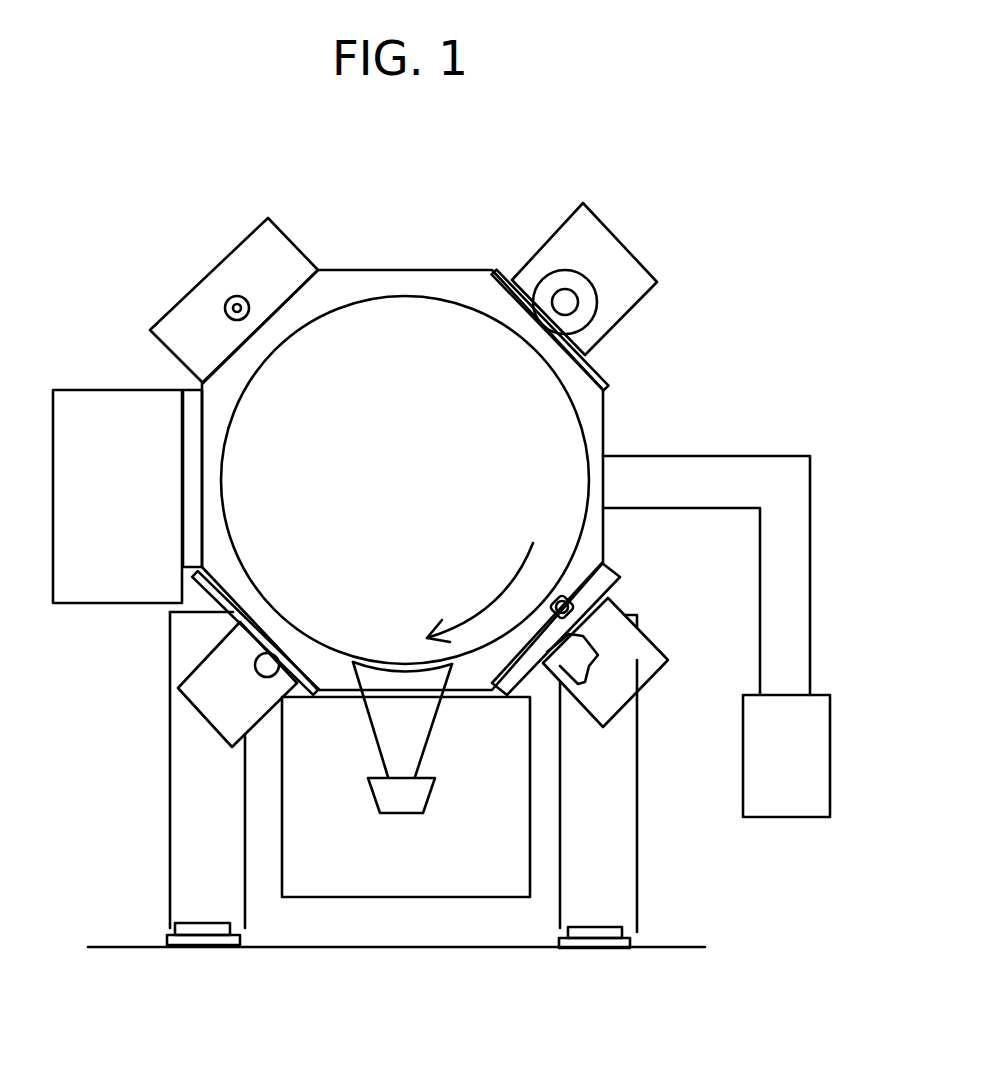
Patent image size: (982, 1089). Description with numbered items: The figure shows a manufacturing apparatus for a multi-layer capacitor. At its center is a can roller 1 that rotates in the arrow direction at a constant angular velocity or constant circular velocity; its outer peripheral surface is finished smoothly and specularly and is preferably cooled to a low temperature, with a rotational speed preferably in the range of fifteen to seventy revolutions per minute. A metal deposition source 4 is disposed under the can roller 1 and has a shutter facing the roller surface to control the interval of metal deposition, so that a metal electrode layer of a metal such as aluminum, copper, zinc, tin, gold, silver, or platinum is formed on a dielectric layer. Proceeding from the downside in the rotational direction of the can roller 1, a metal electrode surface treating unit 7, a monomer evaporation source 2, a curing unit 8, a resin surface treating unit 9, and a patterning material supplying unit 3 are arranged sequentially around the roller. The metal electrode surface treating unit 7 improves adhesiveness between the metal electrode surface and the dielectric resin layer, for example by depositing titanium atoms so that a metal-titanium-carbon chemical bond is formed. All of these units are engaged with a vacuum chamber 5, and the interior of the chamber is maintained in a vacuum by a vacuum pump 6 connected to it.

The can roller 1 is at (340, 328).
The monomer evaporation source 2 is at (125, 585).
The patterning material supplying unit 3 is at (640, 667).
The metal deposition source 4 is at (395, 880).
The vacuum chamber 5 is at (588, 420).
The vacuum pump 6 is at (812, 755).
The metal electrode surface treating unit 7 is at (222, 710).
The curing unit 8 is at (192, 318).
The resin surface treating unit 9 is at (627, 268).